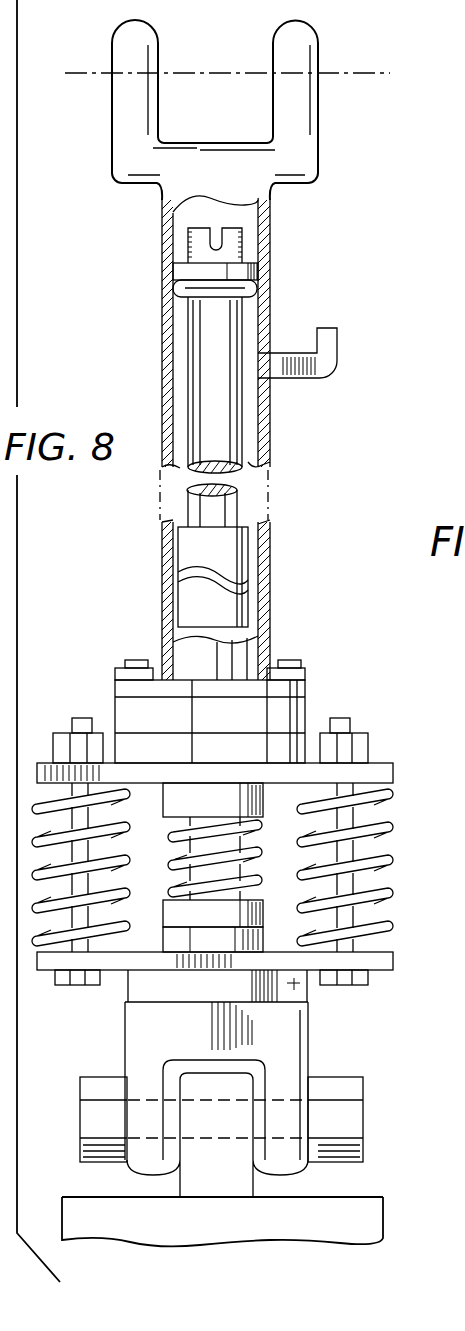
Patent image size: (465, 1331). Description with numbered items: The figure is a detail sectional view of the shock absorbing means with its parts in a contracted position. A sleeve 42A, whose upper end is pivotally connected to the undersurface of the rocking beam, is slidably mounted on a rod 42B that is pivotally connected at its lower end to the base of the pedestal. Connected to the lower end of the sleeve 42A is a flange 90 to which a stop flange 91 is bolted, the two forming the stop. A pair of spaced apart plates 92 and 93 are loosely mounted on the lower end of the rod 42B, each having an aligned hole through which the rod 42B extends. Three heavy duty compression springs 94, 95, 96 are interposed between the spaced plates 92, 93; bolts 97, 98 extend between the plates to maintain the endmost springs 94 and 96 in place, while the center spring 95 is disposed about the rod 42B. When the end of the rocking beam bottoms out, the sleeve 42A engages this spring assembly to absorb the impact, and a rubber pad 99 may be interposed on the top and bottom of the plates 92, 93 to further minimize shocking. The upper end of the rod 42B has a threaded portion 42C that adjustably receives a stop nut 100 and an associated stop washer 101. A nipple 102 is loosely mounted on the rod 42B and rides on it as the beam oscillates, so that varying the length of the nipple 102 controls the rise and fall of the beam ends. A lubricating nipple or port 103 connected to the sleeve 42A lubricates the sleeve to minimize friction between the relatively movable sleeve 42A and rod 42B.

The sleeve 42A is at (266, 452).
The rod 42B is at (218, 420).
The threaded portion 42C is at (243, 247).
The stop nut 100 is at (259, 270).
The stop washer 101 is at (190, 287).
The nipple 102 is at (230, 557).
The lubricating nipple or port 103 is at (335, 346).
The flange 90 is at (305, 688).
The stop flange 91 is at (298, 712).
The plate 92 is at (393, 777).
The plate 93 is at (393, 962).
The compression spring 94 is at (85, 890).
The center spring 95 is at (248, 857).
The compression spring 96 is at (388, 825).
The bolt 97 is at (78, 850).
The bolt 98 is at (363, 878).
The rubber pad 99 is at (130, 750).